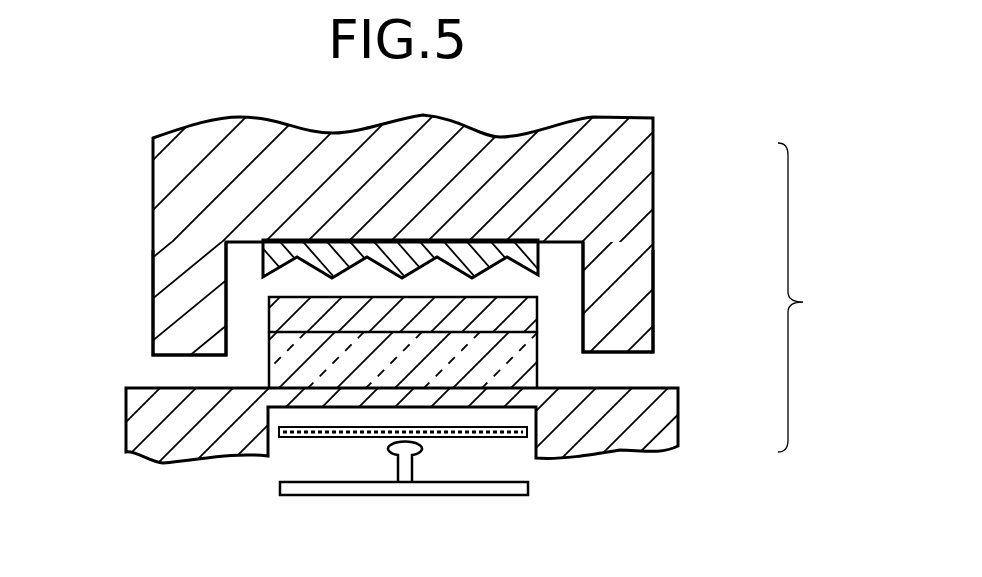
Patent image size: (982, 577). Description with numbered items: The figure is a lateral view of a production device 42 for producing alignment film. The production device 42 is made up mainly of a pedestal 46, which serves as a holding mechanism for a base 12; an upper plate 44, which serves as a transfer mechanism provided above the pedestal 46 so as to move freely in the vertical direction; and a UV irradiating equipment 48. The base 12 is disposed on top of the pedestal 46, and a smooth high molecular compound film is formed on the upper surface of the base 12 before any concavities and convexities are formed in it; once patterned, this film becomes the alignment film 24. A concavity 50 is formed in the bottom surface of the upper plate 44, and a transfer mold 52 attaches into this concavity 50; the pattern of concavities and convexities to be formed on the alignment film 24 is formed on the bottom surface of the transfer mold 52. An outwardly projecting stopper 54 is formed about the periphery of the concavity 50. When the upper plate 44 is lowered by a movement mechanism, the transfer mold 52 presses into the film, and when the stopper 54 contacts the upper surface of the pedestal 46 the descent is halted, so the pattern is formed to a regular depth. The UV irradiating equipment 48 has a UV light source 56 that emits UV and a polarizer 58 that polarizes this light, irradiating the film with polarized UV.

The upper plate 44 is at (643, 166).
The stopper 54 is at (168, 322).
The transfer mold 52 is at (543, 263).
The alignment film 24 is at (540, 313).
The base 12 is at (540, 362).
The pedestal 46 is at (677, 418).
The concavity 50 is at (233, 333).
The UV irradiating equipment 48 is at (463, 493).
The polarizer 58 is at (463, 438).
The UV light source 56 is at (425, 490).
The production device 42 is at (812, 297).